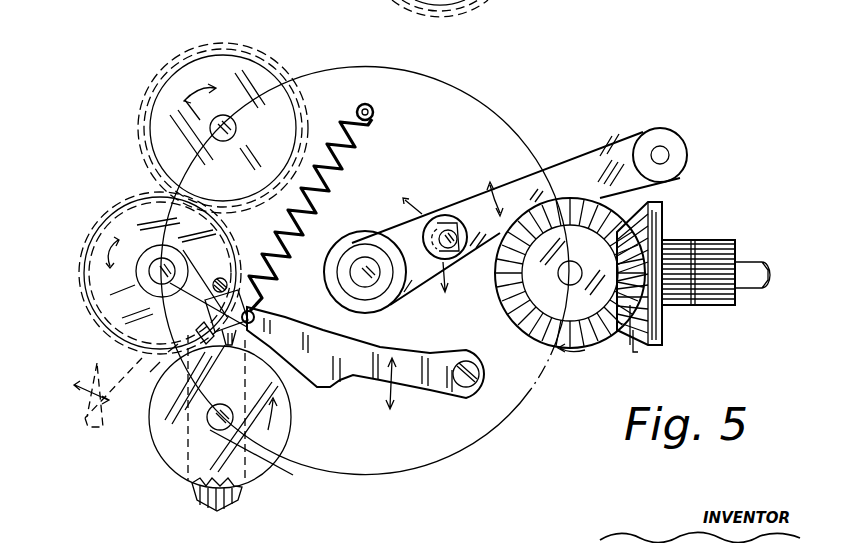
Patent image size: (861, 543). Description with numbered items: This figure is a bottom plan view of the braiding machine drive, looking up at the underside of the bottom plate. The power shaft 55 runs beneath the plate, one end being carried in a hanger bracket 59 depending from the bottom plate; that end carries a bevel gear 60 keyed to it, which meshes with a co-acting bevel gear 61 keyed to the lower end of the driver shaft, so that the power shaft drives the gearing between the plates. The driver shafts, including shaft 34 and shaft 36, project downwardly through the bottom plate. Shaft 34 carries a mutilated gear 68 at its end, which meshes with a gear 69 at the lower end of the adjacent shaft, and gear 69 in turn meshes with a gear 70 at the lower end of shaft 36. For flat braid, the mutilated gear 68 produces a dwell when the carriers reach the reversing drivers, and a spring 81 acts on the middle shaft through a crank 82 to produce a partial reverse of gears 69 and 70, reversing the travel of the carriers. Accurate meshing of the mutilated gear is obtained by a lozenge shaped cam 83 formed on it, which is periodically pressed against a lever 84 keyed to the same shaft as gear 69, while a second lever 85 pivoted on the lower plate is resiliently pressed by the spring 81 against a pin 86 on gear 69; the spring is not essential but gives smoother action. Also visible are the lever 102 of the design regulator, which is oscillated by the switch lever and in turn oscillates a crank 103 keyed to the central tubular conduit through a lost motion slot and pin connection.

The gear 70 is at (173, 92).
The driver shaft 36 is at (222, 128).
The gear 69 is at (150, 274).
The power shaft 55 is at (135, 285).
The mutilated gear 68 is at (257, 463).
The driver shaft 34 is at (213, 417).
The lozenge shaped cam 83 is at (227, 510).
The lever 84 is at (185, 345).
The spring 81 is at (343, 168).
The crank 82 is at (215, 283).
The pin 86 is at (228, 286).
The second lever 85 is at (405, 367).
The lever 102 is at (573, 173).
The crank 103 is at (416, 232).
The bevel gear 61 is at (563, 343).
The bevel gear 60 is at (662, 333).
The hanger bracket 59 is at (710, 252).